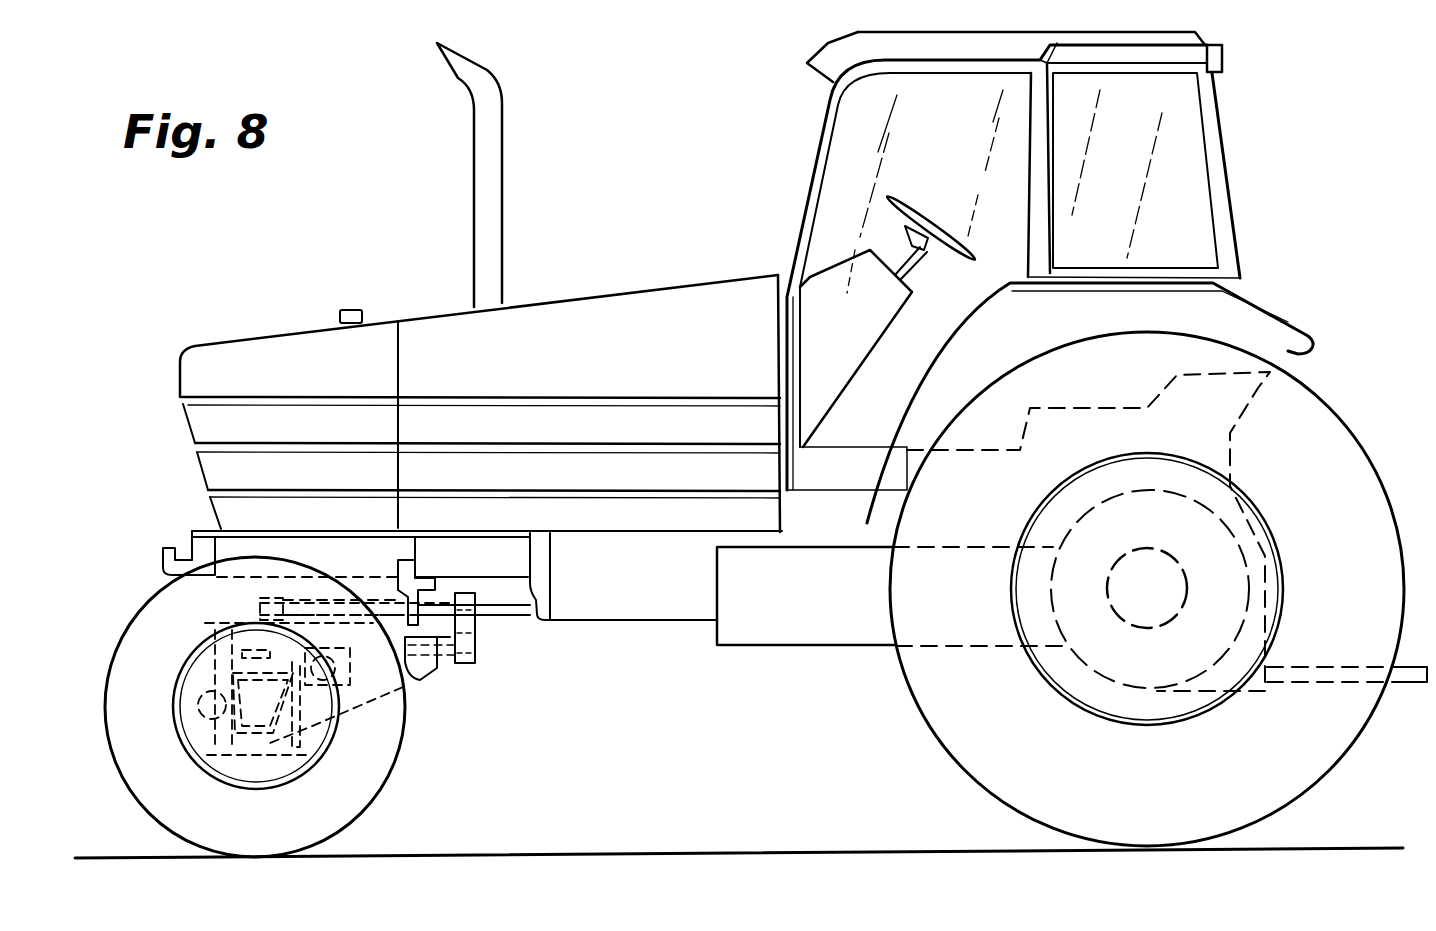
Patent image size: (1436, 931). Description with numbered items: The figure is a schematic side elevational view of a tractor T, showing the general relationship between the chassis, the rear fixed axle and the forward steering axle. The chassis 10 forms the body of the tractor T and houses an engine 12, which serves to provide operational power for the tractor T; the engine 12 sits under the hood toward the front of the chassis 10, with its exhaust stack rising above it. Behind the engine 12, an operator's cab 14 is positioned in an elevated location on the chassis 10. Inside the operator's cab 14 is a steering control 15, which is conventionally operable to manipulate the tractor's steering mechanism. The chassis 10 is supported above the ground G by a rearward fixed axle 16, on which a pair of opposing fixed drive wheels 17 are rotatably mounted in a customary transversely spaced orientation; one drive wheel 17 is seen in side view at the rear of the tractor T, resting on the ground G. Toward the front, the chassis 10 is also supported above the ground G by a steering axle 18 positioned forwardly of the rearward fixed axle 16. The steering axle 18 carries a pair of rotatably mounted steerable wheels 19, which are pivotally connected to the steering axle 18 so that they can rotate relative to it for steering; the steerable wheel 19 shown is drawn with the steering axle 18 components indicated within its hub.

The chassis 10 is at (290, 332).
The engine 12 is at (493, 275).
The operator's cab 14 is at (830, 128).
The steering control 15 is at (927, 223).
The rearward fixed axle 16 is at (1105, 597).
The fixed drive wheels 17 is at (941, 742).
The steering axle 18 is at (333, 737).
The steerable wheels 19 is at (375, 800).
The tractor T is at (1273, 72).
The ground G is at (689, 849).